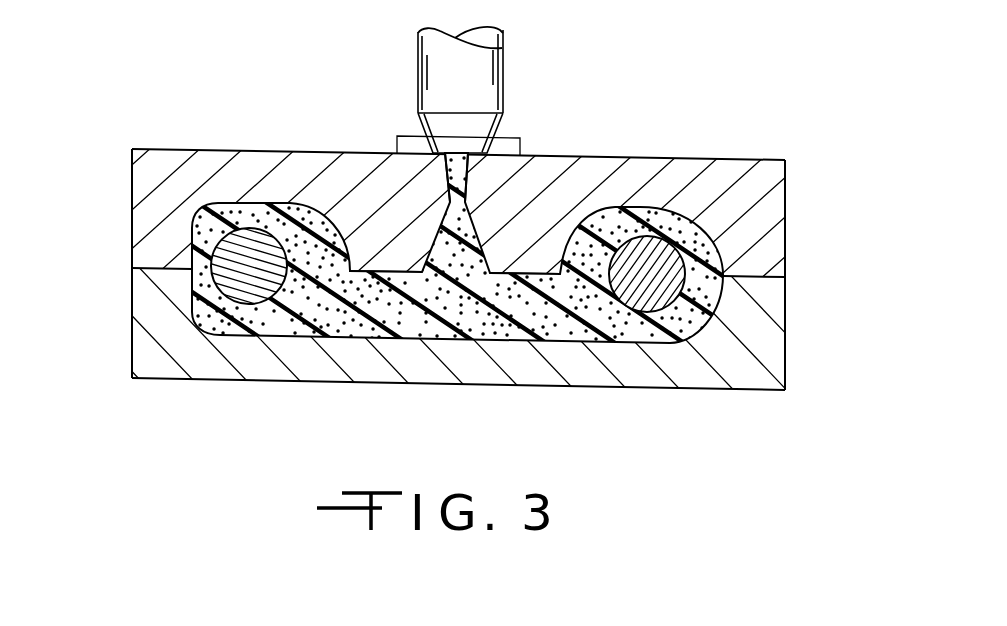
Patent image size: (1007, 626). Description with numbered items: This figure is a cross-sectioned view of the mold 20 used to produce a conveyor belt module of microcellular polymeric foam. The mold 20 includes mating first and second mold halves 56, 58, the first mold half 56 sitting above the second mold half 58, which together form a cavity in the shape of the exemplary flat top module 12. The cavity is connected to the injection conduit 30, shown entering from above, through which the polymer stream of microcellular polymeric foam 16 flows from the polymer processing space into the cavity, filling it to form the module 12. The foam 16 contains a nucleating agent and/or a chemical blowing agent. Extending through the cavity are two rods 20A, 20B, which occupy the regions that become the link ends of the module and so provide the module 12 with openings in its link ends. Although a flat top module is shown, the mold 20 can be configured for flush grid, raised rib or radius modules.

The module 12 is at (711, 212).
The microcellular polymeric foam 16 is at (472, 183).
The mold 20 is at (666, 155).
The rod 20A is at (230, 275).
The rod 20B is at (640, 300).
The injection conduit 30 is at (503, 67).
The first mold half 56 is at (787, 203).
The second mold half 58 is at (787, 307).